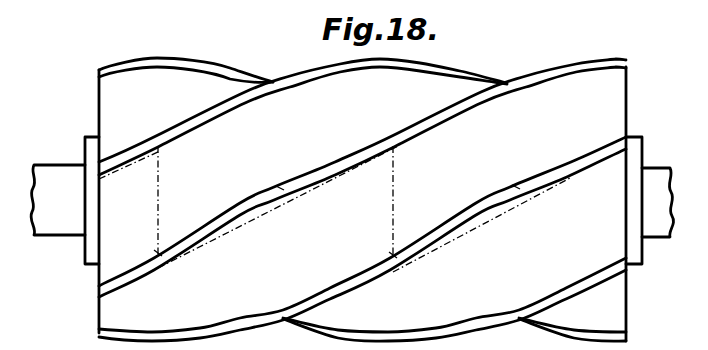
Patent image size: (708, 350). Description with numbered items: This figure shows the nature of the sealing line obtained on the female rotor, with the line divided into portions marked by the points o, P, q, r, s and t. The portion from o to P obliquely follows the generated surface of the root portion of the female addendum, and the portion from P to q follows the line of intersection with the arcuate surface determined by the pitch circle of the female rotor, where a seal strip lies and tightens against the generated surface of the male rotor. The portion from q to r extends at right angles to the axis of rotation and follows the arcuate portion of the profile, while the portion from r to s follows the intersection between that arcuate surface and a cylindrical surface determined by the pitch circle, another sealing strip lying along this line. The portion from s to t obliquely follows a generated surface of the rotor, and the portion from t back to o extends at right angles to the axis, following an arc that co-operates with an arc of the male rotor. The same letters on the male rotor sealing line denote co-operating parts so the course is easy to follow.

The sealing line point r is at (158, 146).
The sealing line point q is at (157, 253).
The sealing line point p P is at (273, 192).
The sealing line point o is at (280, 190).
The sealing line point s is at (281, 205).
The sealing line point t is at (278, 204).